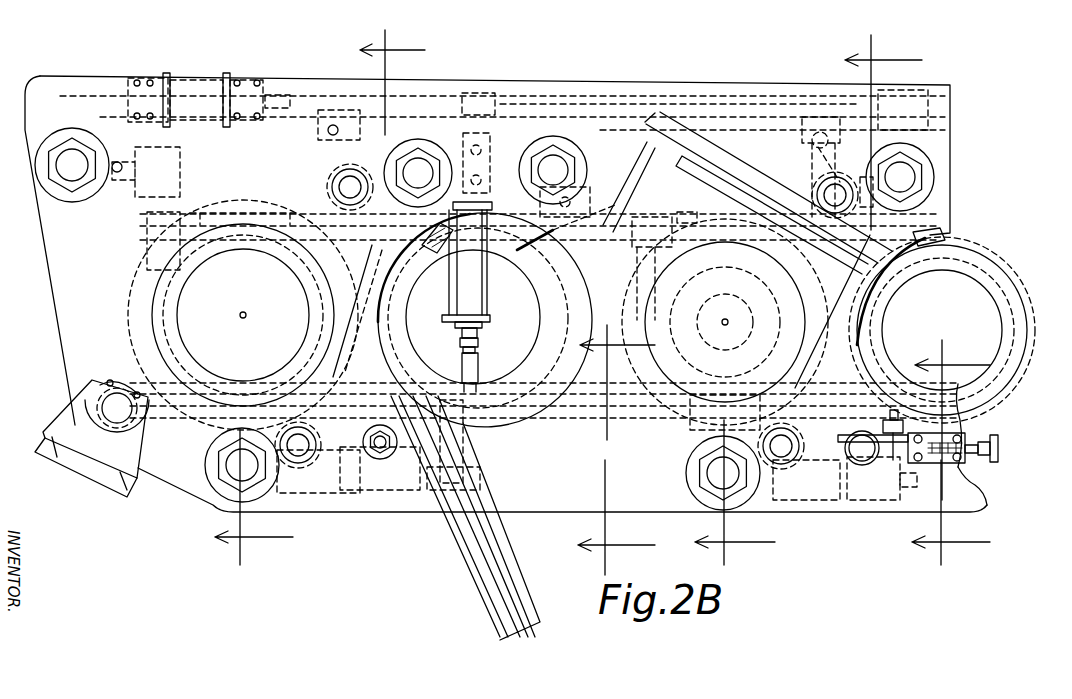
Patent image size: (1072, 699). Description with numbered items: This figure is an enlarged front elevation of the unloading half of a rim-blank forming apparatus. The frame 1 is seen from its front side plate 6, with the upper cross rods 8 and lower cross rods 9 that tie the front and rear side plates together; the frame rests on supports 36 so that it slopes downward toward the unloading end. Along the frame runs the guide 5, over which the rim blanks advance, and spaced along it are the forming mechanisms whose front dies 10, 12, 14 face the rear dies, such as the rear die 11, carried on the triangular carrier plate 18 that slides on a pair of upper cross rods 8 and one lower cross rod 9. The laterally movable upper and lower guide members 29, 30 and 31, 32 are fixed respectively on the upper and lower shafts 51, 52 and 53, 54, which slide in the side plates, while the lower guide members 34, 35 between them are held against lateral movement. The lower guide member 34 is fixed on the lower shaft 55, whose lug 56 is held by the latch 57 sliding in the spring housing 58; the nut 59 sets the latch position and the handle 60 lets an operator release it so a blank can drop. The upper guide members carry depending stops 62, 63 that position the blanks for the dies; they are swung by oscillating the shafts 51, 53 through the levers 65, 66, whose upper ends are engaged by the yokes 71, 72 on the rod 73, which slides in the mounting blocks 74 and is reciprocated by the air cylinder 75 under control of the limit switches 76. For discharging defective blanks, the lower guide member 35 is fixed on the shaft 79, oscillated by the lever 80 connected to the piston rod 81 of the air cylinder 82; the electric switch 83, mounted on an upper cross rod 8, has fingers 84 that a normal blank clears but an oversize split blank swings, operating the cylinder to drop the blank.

The frame 1 is at (607, 76).
The guide 5 is at (669, 75).
The front side plate 6 is at (58, 277).
The upper cross rods 8 is at (70, 165).
The lower cross rods 9 is at (250, 475).
The front die 10 is at (616, 449).
The rear die 11 is at (357, 317).
The front die 12 is at (780, 308).
The front die 14 is at (316, 280).
The carrier plate 18 is at (120, 262).
The upper guide member 29 is at (942, 236).
The lower guide member 30 is at (700, 420).
The upper guide member 31 is at (248, 214).
The lower guide member 32 is at (222, 376).
The lower guide member 34 is at (954, 423).
The lower guide member 35 is at (548, 425).
The supports 36 is at (135, 480).
The upper shaft 51 is at (826, 190).
The lower shaft 52 is at (778, 444).
The upper shaft 53 is at (332, 187).
The lower shaft 54 is at (290, 440).
The lower shaft 55 is at (888, 420).
The lug 56 is at (838, 439).
The latch 57 is at (910, 462).
The housing 58 is at (970, 468).
The nut 59 is at (965, 437).
The handle 60 is at (998, 448).
The stop 62 is at (632, 232).
The stop 63 is at (150, 230).
The lever 65 is at (860, 160).
The lever 66 is at (372, 170).
The yoke 71 is at (805, 142).
The yoke 72 is at (320, 128).
The rod 73 is at (524, 96).
The mounting blocks 74 is at (436, 86).
The fluid pressure operated device 75 is at (196, 80).
The limit switches 76 is at (180, 178).
The shaft 79 is at (363, 442).
The lever 80 is at (462, 430).
The piston rod 81 is at (479, 338).
The fluid pressure operated device 82 is at (487, 298).
The electric switch 83 is at (583, 180).
The fingers 84 is at (517, 252).